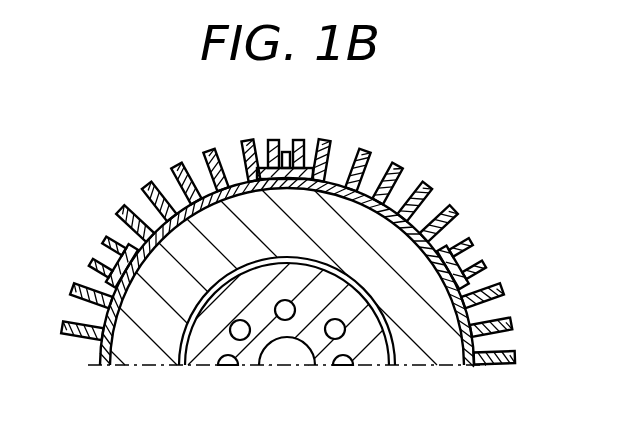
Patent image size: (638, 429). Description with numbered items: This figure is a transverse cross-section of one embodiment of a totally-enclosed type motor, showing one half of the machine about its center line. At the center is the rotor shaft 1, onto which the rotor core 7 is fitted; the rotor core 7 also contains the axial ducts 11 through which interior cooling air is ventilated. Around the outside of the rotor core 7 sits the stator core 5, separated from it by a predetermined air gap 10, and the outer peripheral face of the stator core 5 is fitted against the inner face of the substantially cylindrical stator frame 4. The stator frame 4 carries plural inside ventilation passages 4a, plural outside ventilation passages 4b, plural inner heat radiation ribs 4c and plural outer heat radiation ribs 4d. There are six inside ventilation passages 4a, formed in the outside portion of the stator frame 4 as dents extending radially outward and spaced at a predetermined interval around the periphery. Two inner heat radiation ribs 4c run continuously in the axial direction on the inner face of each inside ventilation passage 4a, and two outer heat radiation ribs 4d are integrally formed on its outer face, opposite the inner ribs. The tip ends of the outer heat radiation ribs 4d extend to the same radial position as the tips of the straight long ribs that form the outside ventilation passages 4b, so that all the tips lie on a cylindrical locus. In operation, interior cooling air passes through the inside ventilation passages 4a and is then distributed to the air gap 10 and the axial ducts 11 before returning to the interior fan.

The rotor shaft 1 is at (287, 352).
The stator frame 4 is at (200, 165).
The inside ventilation passage 4a is at (305, 160).
The outside ventilation passage 4b is at (173, 197).
The inner heat radiation rib 4c is at (290, 141).
The outer heat radiation rib 4d is at (273, 140).
The stator core 5 is at (333, 197).
The rotor core 7 is at (378, 353).
The air gap 10 is at (321, 262).
The axial duct 11 is at (331, 345).